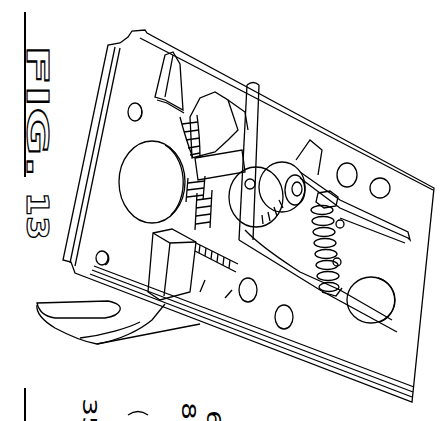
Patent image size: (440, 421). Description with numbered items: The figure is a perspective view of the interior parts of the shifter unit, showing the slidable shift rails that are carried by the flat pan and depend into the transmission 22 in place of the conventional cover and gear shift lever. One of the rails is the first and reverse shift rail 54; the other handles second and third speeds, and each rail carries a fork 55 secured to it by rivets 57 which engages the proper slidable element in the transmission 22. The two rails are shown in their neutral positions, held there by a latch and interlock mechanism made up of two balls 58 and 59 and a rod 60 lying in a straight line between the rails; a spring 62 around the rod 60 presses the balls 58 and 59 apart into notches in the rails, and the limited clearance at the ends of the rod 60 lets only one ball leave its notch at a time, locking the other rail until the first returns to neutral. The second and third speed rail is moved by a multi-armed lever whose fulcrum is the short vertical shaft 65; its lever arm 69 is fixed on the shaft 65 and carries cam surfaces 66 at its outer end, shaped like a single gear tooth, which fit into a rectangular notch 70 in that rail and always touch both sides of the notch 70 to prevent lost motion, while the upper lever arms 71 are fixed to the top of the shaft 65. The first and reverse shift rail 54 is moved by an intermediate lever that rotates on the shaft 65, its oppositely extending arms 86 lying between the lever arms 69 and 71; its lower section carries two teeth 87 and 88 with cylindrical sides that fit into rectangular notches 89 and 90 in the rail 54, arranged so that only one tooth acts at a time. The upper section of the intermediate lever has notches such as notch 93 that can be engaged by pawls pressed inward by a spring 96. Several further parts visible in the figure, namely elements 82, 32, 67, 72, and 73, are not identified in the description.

The base plate 82 is at (217, 216).
The mounting hole 32 is at (126, 60).
The rivets 57 is at (383, 188).
The rectangular notch 70 is at (251, 304).
The hole 67 is at (284, 330).
The rod 60 is at (394, 296).
The arms of intermediate lever 86 is at (175, 163).
The tooth 87 is at (198, 100).
The spring 96 is at (190, 144).
The rectangular notch 89 is at (226, 98).
The tooth 88 is at (240, 108).
The rectangular notch 90 is at (250, 85).
The lever arm 71 is at (258, 145).
The knurled wheel 72 is at (286, 160).
The vertical shaft 65 is at (305, 162).
The shift rail 54 is at (308, 133).
The ball 59 is at (329, 190).
The ball 58 is at (326, 300).
The notch 93 is at (196, 240).
The lever edge 73 is at (296, 270).
The spring 62 is at (345, 238).
The fork 55 is at (160, 318).
The cam surfaces 66 is at (205, 292).
The lever arm 69 is at (228, 300).
The transmission 22 is at (327, 353).